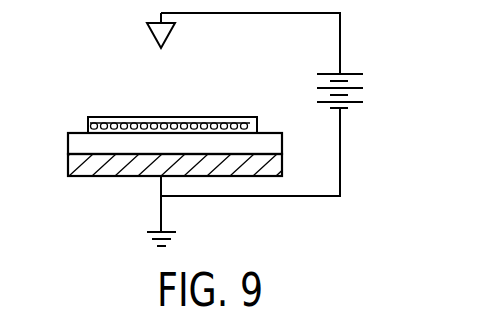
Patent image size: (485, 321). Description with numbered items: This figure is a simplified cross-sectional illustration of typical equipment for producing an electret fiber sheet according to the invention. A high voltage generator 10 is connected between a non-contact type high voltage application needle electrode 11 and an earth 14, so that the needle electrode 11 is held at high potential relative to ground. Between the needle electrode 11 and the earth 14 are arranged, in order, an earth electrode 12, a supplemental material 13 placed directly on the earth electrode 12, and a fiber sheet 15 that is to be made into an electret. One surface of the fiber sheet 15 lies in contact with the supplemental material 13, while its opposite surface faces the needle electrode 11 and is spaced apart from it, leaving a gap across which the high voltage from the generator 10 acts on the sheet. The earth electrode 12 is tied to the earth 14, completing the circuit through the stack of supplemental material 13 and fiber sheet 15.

The high voltage generator 10 is at (352, 81).
The non-contact needle electrode 11 is at (151, 33).
The earth electrode 12 is at (68, 160).
The supplemental material 13 is at (68, 141).
The earth 14 is at (147, 238).
The fiber sheet 15 is at (101, 117).